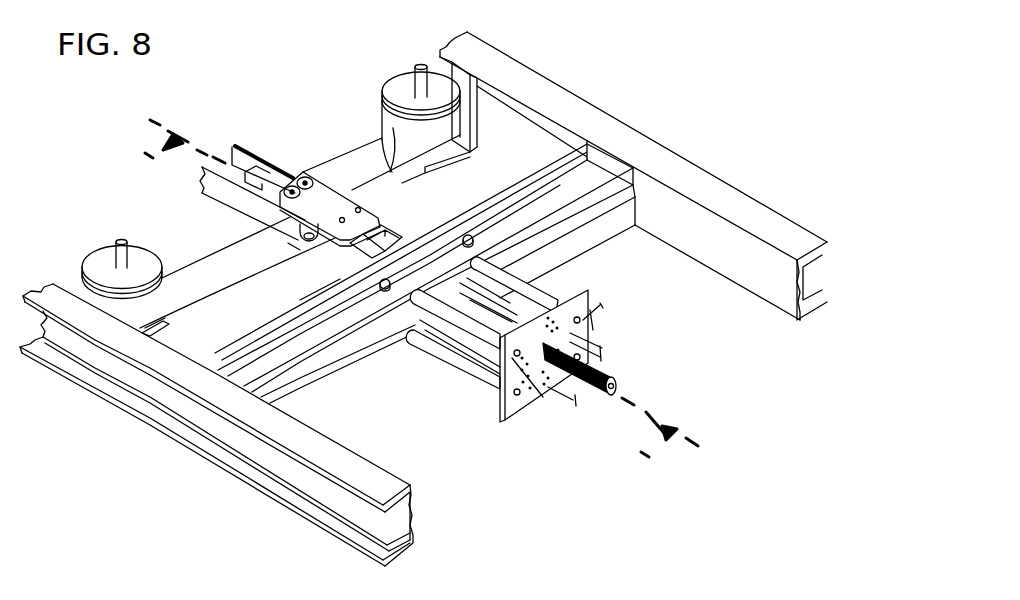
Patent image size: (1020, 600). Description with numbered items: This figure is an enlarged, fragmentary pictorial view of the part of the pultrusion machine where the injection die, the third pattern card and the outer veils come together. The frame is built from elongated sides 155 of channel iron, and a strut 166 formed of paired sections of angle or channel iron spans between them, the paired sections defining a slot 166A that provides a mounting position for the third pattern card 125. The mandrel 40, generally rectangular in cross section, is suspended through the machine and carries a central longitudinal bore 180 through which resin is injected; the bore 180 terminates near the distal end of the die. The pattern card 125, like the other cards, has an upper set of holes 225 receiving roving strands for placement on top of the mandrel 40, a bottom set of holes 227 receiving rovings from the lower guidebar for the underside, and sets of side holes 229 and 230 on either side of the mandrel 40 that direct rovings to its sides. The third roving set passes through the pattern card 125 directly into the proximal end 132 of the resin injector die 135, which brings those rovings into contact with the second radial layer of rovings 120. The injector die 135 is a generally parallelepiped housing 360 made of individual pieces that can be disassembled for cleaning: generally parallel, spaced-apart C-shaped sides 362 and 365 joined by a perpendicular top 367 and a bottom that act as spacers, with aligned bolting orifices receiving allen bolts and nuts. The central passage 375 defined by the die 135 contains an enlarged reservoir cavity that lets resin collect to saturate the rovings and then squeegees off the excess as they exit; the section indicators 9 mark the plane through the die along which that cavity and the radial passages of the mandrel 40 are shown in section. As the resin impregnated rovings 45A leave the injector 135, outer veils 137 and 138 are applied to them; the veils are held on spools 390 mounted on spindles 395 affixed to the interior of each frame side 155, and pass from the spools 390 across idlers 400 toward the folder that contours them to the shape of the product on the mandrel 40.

The section line 9- 9 is at (419, 296).
The side 155 is at (333, 520).
The spool 390 is at (88, 247).
The spindle 395 is at (124, 257).
The outer veil 138 is at (232, 158).
The resin impregnated rovings 45A is at (262, 172).
The outer veil 137 is at (238, 193).
The idler 400 is at (292, 178).
The side 365 is at (393, 232).
The top 367 is at (390, 215).
The resin injector die 135 is at (448, 203).
The side 362 is at (335, 284).
The housing 360 is at (483, 273).
The central passage 375 is at (528, 293).
The proximal end 132 is at (515, 312).
The slot 166A is at (380, 334).
The strut 166 is at (315, 411).
The upper set of holes 225 is at (558, 303).
The side holes 230 is at (588, 326).
The third pattern card 125 is at (608, 327).
The second radial layer of rovings 120 is at (617, 367).
The mandrel 40 is at (623, 390).
The central longitudinal bore 180 is at (617, 392).
The side holes 229 is at (523, 389).
The bottom set of holes 227 is at (538, 394).